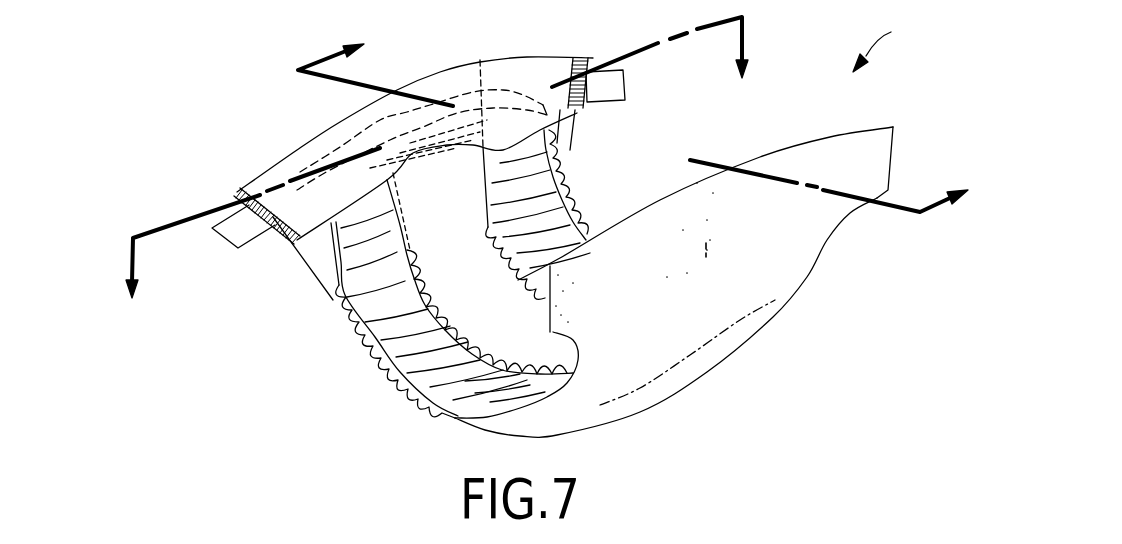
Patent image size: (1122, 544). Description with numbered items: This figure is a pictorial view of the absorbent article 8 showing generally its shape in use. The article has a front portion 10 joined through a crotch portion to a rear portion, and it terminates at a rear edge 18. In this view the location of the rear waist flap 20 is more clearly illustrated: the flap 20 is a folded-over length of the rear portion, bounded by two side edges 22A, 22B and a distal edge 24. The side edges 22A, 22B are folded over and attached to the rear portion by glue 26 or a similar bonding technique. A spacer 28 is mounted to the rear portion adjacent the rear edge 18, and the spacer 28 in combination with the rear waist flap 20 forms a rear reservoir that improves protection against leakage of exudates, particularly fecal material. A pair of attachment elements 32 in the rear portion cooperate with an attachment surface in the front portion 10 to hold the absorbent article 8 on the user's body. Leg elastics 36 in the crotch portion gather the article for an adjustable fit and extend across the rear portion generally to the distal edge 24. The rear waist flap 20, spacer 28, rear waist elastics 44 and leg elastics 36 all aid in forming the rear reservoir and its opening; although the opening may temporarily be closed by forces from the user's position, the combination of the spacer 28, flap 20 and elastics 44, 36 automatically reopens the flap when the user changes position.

The absorbent article 8 is at (640, 117).
The front portion 10 is at (437, 171).
The rear edge 18 is at (332, 124).
The rear waist flap 20 is at (310, 153).
The side edge 22A is at (273, 234).
The side edge 22B is at (593, 63).
The distal edge 24 is at (430, 152).
The glue 26 is at (250, 186).
The spacer 28 is at (487, 56).
The attachment elements 32 is at (230, 232).
The leg elastics 36 is at (333, 291).
The rear waist elastics 44 is at (405, 195).